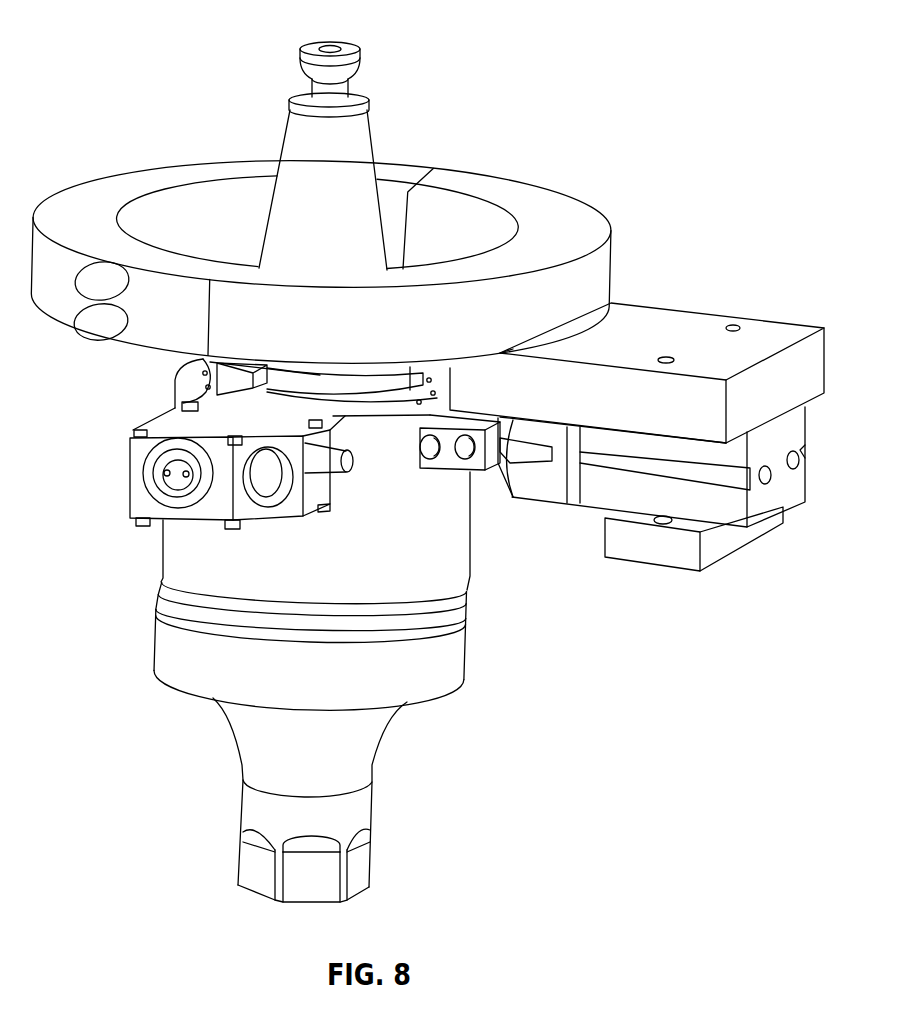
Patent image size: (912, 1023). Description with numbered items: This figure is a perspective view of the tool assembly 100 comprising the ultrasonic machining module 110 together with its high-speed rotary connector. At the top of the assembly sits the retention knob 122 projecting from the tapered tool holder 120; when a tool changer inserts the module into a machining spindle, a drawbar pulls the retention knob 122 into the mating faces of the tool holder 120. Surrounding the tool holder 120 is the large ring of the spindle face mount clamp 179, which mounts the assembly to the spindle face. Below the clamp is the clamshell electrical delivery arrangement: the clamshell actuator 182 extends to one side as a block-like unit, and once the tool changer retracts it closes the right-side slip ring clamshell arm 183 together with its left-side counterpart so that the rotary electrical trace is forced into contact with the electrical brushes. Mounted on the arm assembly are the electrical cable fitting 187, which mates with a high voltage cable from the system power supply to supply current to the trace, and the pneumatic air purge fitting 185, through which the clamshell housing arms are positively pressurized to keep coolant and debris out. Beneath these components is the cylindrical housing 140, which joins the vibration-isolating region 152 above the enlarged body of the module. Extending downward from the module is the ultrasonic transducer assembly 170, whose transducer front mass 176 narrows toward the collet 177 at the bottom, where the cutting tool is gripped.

The tool assembly 100 is at (146, 101).
The retention knob 122 is at (353, 48).
The tool holder 120 is at (349, 219).
The spindle face mount clamp 179 is at (555, 192).
The clamshell actuator 182 is at (703, 313).
The right-side slip ring clamshell arm 183 is at (175, 386).
The electrical cable fitting 187 is at (160, 472).
The pneumatic air purge fitting 185 is at (350, 467).
The housing 140 is at (349, 569).
The vibration-isolating region 152 is at (158, 579).
The ultrasonic machining module 110 is at (470, 649).
The ultrasonic transducer assembly 170 is at (233, 728).
The transducer front mass 176 is at (394, 729).
The collet 177 is at (370, 867).